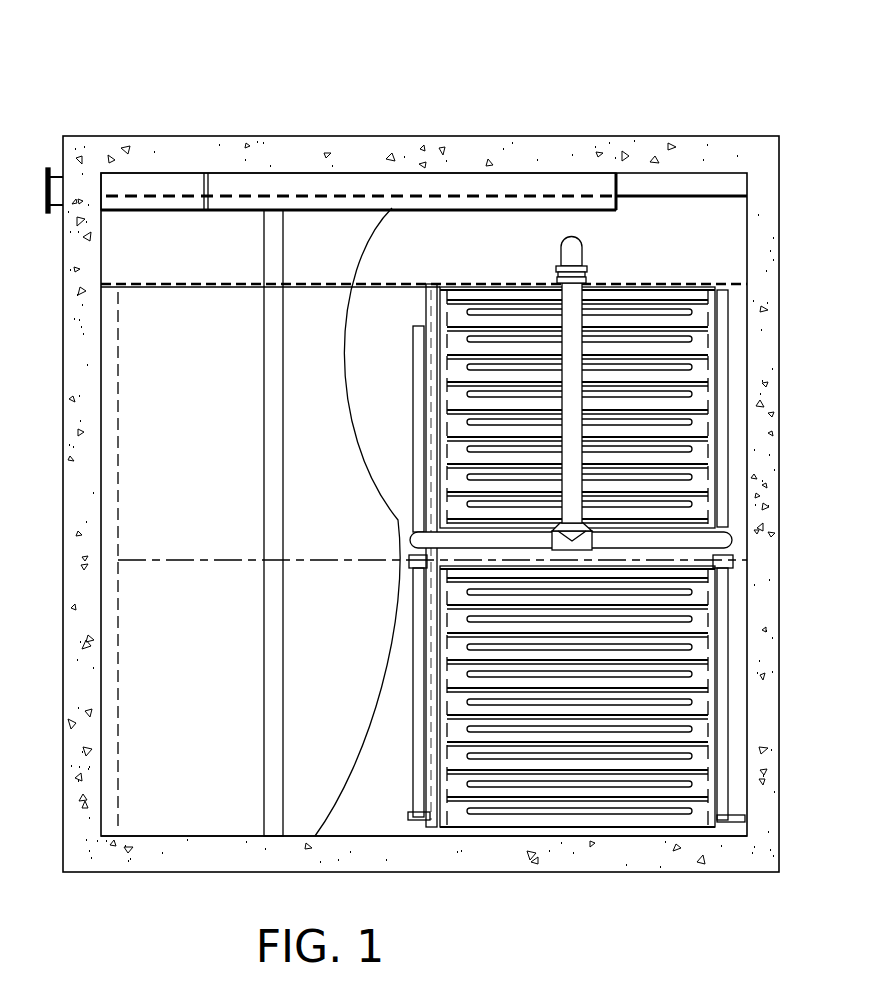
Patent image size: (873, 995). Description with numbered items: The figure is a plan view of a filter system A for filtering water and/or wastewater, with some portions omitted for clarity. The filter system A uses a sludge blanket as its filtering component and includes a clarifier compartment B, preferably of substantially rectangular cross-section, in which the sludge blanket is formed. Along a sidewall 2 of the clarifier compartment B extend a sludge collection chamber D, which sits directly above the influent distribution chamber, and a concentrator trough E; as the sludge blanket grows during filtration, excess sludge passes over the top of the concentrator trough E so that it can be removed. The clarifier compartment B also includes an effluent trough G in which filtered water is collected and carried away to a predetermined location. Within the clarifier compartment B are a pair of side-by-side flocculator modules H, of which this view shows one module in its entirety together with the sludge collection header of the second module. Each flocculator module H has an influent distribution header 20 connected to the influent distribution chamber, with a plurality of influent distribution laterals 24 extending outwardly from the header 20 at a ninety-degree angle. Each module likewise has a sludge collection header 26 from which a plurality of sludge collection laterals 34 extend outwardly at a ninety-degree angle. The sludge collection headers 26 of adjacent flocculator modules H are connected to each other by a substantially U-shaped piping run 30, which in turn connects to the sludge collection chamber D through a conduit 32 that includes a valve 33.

The filter system A is at (182, 104).
The clarifier compartment B is at (145, 860).
The sidewall 2 is at (483, 152).
The effluent trough G is at (348, 185).
The concentrator trough E is at (700, 185).
The sludge collection chamber D is at (204, 277).
The flocculator module H is at (661, 283).
The influent distribution header 20 is at (426, 316).
The influent distribution laterals 24 is at (549, 798).
The sludge collection header 26 is at (418, 727).
The piping run 30 is at (458, 540).
The conduit 32 is at (583, 322).
The valve 33 is at (558, 268).
The sludge collection laterals 34 is at (657, 812).